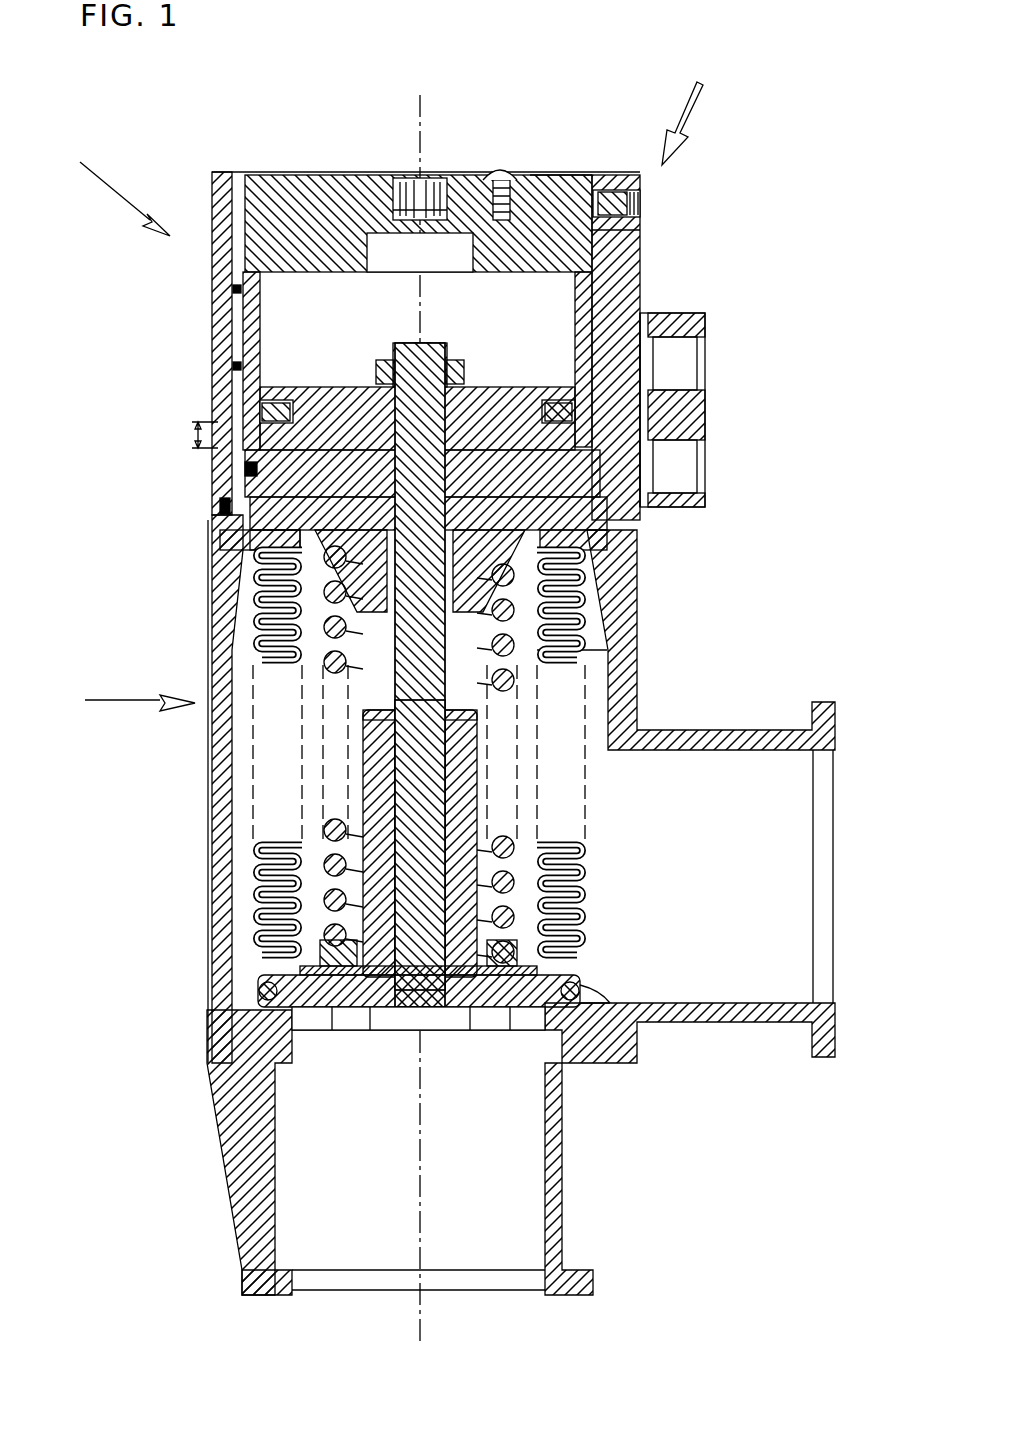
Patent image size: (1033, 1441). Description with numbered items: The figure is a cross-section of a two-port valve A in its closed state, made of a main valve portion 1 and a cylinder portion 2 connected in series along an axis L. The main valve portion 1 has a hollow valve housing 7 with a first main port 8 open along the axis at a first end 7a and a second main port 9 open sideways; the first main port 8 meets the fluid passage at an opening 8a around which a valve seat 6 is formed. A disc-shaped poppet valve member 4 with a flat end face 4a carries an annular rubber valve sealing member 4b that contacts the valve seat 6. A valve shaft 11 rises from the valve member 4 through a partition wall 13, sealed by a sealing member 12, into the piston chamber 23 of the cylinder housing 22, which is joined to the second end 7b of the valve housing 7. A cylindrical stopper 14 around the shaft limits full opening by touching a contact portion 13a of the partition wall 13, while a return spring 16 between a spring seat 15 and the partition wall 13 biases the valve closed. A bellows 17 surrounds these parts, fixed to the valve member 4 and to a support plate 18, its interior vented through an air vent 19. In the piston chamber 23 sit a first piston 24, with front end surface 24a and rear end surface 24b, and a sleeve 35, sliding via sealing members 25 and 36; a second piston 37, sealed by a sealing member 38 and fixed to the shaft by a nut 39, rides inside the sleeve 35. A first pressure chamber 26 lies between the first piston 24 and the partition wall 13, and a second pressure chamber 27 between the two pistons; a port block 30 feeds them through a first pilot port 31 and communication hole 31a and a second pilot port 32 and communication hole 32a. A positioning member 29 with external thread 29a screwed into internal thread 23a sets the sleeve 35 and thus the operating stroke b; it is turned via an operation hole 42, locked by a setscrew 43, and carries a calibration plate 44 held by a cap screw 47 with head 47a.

The main valve portion 1 is at (128, 700).
The cylinder portion 2 is at (113, 185).
The valve member 4 is at (331, 1013).
The end face 4a is at (366, 1013).
The valve sealing member 4b is at (262, 993).
The valve seat 6 is at (586, 993).
The valve housing 7 is at (216, 673).
The first end of valve housing 7a is at (607, 1070).
The second end of valve housing 7b is at (235, 522).
The first main port 8 is at (486, 1250).
The opening 8a is at (542, 1020).
The second main port 9 is at (792, 869).
The valve shaft 11 is at (408, 791).
The sealing member 12 is at (369, 450).
The partition wall 13 is at (633, 573).
The contact portion 13a is at (610, 660).
The stopper 14 is at (446, 786).
The spring seat 15 is at (320, 958).
The return spring 16 is at (335, 863).
The bellows 17 is at (262, 601).
The support plate 18 is at (262, 546).
The air vent 19 is at (262, 486).
The cylinder housing 22 is at (214, 206).
The piston chamber 23 is at (233, 318).
The internal thread 23a is at (594, 312).
The first piston 24 is at (655, 511).
The front end surface 24a is at (218, 507).
The rear end surface 24b is at (262, 414).
The sealing member 25 is at (245, 468).
The first pressure chamber 26 is at (633, 521).
The second pressure chamber 27 is at (650, 402).
The positioning member 29 is at (289, 182).
The external thread 29a is at (641, 240).
The port block 30 is at (672, 326).
The first pilot port 31 is at (682, 466).
The communication hole 31a is at (663, 496).
The second pilot port 32 is at (680, 350).
The communication hole 32a is at (650, 430).
The sleeve 35 is at (238, 291).
The sealing member 36 is at (235, 368).
The second piston 37 is at (511, 393).
The sealing member 38 is at (553, 392).
The nut 39 is at (440, 353).
The operation hole 42 is at (405, 190).
The setscrew 43 is at (642, 205).
The calibration plate 44 is at (566, 184).
The cap screw 47 is at (513, 178).
The head of cap screw 47a is at (494, 177).
The two-port valve A is at (685, 106).
The axis L is at (415, 708).
The operating stroke b is at (192, 438).